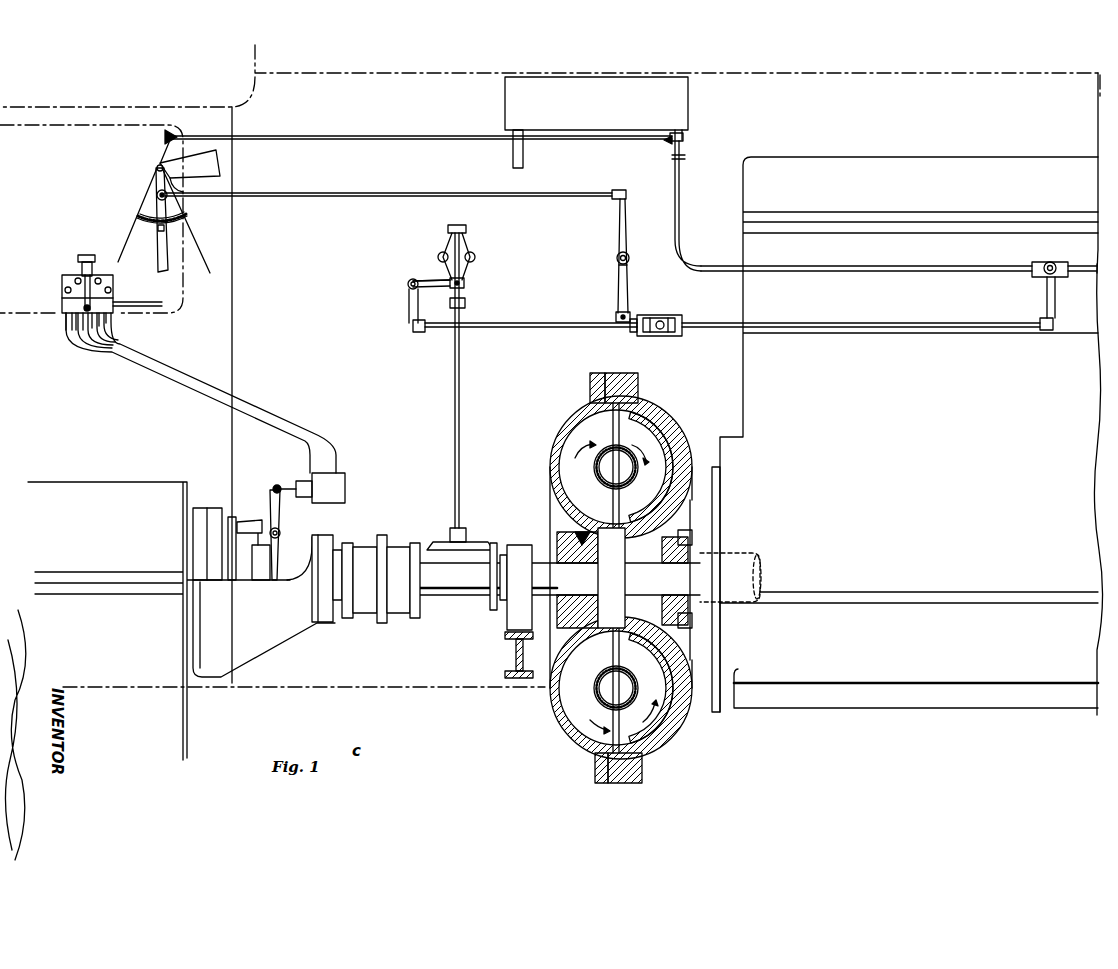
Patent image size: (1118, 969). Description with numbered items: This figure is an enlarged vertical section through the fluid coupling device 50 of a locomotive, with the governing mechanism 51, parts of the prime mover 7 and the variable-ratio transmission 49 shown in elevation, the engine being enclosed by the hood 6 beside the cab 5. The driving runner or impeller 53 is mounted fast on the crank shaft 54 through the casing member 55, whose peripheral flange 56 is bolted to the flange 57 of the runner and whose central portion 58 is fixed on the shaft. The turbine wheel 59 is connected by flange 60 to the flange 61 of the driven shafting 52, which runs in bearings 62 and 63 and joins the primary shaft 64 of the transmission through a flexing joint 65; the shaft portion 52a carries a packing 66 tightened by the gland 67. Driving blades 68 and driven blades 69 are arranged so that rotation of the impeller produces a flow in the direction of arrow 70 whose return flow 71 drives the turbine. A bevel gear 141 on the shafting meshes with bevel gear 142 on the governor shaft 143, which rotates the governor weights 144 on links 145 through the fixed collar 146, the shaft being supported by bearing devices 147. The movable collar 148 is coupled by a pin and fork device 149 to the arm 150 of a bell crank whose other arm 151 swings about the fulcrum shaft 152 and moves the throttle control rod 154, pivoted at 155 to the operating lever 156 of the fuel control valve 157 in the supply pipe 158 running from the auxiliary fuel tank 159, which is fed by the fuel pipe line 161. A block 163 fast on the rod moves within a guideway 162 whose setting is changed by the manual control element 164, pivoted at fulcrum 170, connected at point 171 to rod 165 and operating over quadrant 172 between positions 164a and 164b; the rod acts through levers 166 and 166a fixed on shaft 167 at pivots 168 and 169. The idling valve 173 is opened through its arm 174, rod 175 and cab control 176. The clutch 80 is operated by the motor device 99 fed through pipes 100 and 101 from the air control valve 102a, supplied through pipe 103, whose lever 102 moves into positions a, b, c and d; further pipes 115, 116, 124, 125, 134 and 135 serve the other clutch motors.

The cab 5 is at (238, 305).
The housing or hood 6 is at (907, 70).
The prime mover 7 is at (909, 434).
The variable-ratio power transmission mechanism 49 is at (286, 621).
The flexible clutch or coupling device 50 is at (550, 462).
The governing mechanism 51 is at (408, 282).
The shafting 52 is at (452, 598).
The portion of shaft 52a is at (601, 578).
The driving runner or fluid impeller 53 is at (556, 445).
The crank shaft 54 is at (748, 553).
The casing member 55 is at (667, 430).
The peripheral flange 56 is at (624, 374).
The flange of the runner 57 is at (590, 388).
The central portion 58 is at (720, 637).
The turbine wheel 59 is at (683, 436).
The flange 60 is at (668, 533).
The flange of the shaft 61 is at (642, 576).
The bearing 62 is at (517, 635).
The bearing 63 is at (682, 552).
The primary shaft 64 is at (292, 560).
The flexing joint 65 is at (400, 600).
The packing or stuffing box 66 is at (572, 535).
The gland 67 is at (557, 538).
The driving vanes or blades 68 is at (602, 577).
The driven vanes or blades 69 is at (640, 577).
The arrow 70 is at (591, 580).
The return flow 71 is at (645, 582).
The clutch 80 is at (240, 522).
The motor device 99 is at (345, 486).
The pipe 100 is at (196, 391).
The pipe 101 is at (270, 412).
The operating lever 102 is at (80, 258).
The air control valve 102a is at (108, 300).
The pipe 103 is at (152, 307).
The air supply pipe 115 is at (63, 328).
The air supply pipe 116 is at (68, 345).
The pipe 124 is at (75, 340).
The pipe 125 is at (82, 345).
The pipe 134 is at (92, 342).
The pipe 135 is at (104, 345).
The bevel gear 141 is at (492, 605).
The bevel gear 142 is at (478, 541).
The governor shaft 143 is at (455, 420).
The governor weights 144 is at (443, 255).
The links or straps 145 is at (477, 263).
The fixed collar 146 is at (464, 229).
The bearing devices 147 is at (465, 303).
The movable collar 148 is at (466, 288).
The pin and cooperating fork device 149 is at (466, 281).
The arm of bell crank 150 is at (430, 280).
The arm of bell crank 151 is at (408, 312).
The bell crank fulcrum shaft 152 is at (408, 288).
The throttle control rod 154 is at (557, 328).
The pivot 155 is at (416, 334).
The operating arm or lever 156 is at (1046, 297).
The fuel control valve 157 is at (1040, 263).
The supply pipe 158 is at (1083, 272).
The auxiliary fuel tank 159 is at (585, 82).
The fuel pipe line 161 is at (513, 157).
The guideway 162 is at (662, 336).
The block 163 is at (663, 315).
The manual control element 164 is at (167, 270).
The position 164a is at (200, 250).
The position 164b is at (132, 235).
The rod 165 is at (338, 198).
The lever 166 is at (625, 212).
The lever 166a is at (619, 275).
The shaft 167 is at (630, 257).
The pivotal connection 168 is at (622, 190).
The pivotal connection 169 is at (616, 315).
The fulcrum 170 is at (158, 165).
The point 171 is at (157, 193).
The quadrant 172 is at (147, 232).
The idling valve 173 is at (684, 147).
The arm 174 is at (671, 139).
The rod 175 is at (338, 135).
The cab control 176 is at (172, 130).
The position a is at (63, 290).
The position b is at (73, 282).
The position c is at (100, 278).
The position d is at (112, 290).